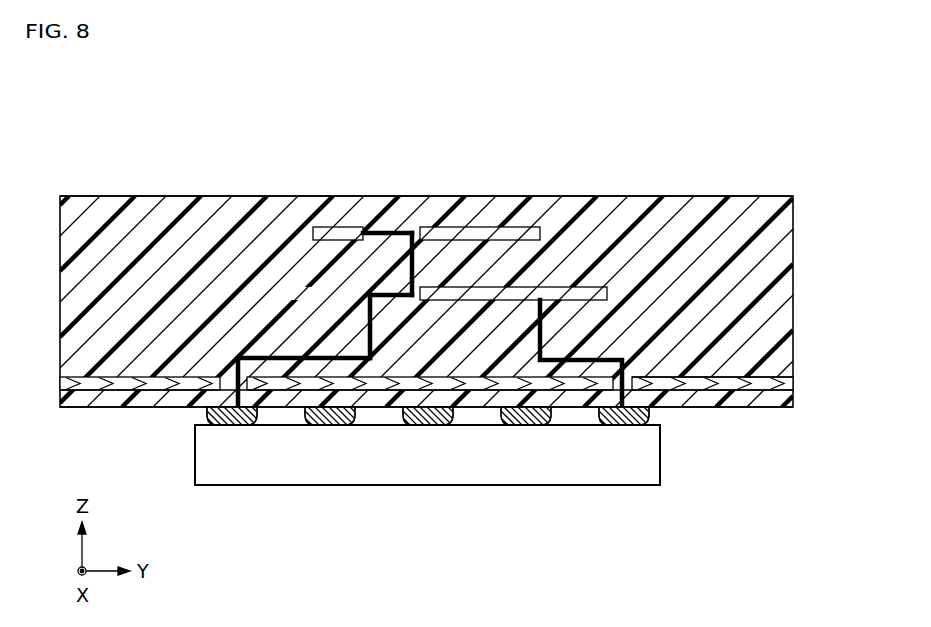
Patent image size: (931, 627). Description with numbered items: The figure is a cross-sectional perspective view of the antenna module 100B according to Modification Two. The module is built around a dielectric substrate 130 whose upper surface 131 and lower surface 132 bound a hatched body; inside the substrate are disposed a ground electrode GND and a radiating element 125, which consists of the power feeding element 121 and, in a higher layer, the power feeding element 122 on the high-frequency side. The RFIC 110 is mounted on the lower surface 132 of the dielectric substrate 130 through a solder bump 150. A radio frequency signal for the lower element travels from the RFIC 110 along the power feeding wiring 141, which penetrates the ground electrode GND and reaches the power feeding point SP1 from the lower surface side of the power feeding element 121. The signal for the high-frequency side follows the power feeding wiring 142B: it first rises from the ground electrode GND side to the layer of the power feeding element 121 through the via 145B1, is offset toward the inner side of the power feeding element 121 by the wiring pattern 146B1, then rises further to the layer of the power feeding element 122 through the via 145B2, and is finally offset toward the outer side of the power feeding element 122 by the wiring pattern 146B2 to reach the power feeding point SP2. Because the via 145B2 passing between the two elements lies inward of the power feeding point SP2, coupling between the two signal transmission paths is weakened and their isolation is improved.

The antenna module 100B is at (763, 143).
The RFIC 110 is at (660, 459).
The power feeding element 121 is at (510, 293).
The power feeding element 122 is at (473, 235).
The radiating element 125 is at (513, 208).
The dielectric substrate 130 is at (790, 260).
The first main surface 131 is at (743, 196).
The lower surface 132 is at (743, 407).
The power feeding wiring 141 is at (633, 368).
The ground electrode GND is at (782, 384).
The power feeding wiring 142B is at (247, 356).
The via 145B1 is at (371, 330).
The via 145B2 is at (413, 263).
The wiring pattern 146B1 is at (397, 297).
The wiring pattern 146B2 is at (397, 232).
The power feeding point SP1 is at (541, 298).
The power feeding point SP2 is at (363, 228).
The solder bump 150 is at (212, 412).